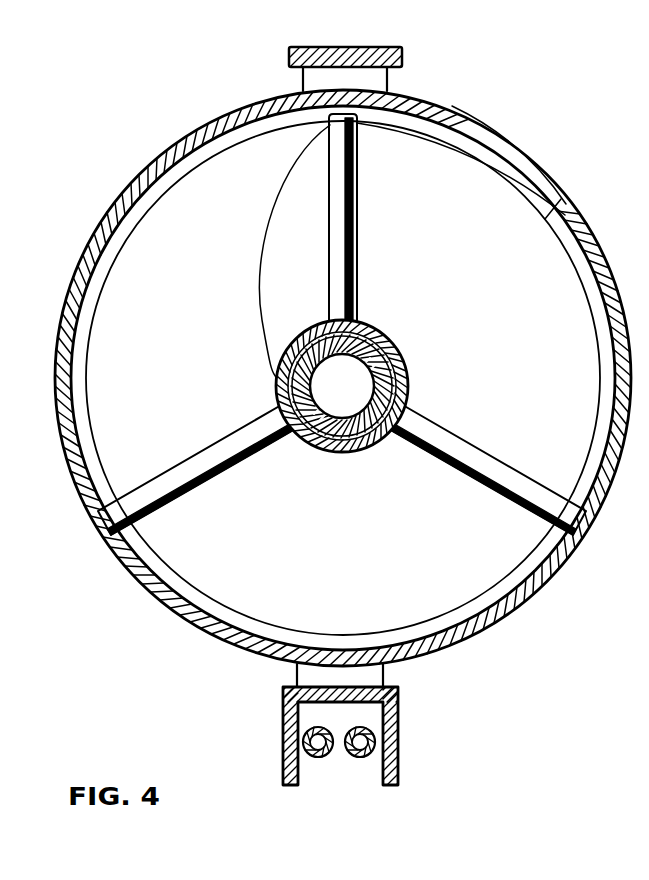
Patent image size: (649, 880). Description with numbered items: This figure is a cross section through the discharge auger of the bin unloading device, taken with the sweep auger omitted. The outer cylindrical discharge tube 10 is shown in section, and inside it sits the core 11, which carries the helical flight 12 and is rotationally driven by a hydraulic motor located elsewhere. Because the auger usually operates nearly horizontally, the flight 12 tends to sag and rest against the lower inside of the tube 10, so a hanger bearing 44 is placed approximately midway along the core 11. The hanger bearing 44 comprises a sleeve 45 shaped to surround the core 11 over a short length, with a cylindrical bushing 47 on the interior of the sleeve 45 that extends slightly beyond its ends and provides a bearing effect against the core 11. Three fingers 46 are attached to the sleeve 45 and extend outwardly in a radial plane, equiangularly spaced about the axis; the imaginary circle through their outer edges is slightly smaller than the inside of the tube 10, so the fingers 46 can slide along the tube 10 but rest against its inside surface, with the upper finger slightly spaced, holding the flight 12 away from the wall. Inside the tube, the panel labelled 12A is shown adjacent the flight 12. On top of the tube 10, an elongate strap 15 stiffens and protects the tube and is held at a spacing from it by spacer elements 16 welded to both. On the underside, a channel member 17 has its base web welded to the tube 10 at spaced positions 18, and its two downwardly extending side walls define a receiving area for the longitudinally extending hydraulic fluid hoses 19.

The discharge tube 10 is at (484, 120).
The core 11 is at (340, 358).
The helical flight 12 is at (177, 568).
The liner panel 12A is at (550, 212).
The elongate strap 15 is at (342, 47).
The spacer elements 16 is at (300, 80).
The channel member 17 is at (398, 730).
The weld positions 18 is at (298, 680).
The hydraulic fluid hoses 19 is at (358, 758).
The hanger bearing 44 is at (396, 326).
The sleeve 45 is at (403, 347).
The fingers 46 is at (335, 153).
The bushing 47 is at (407, 380).